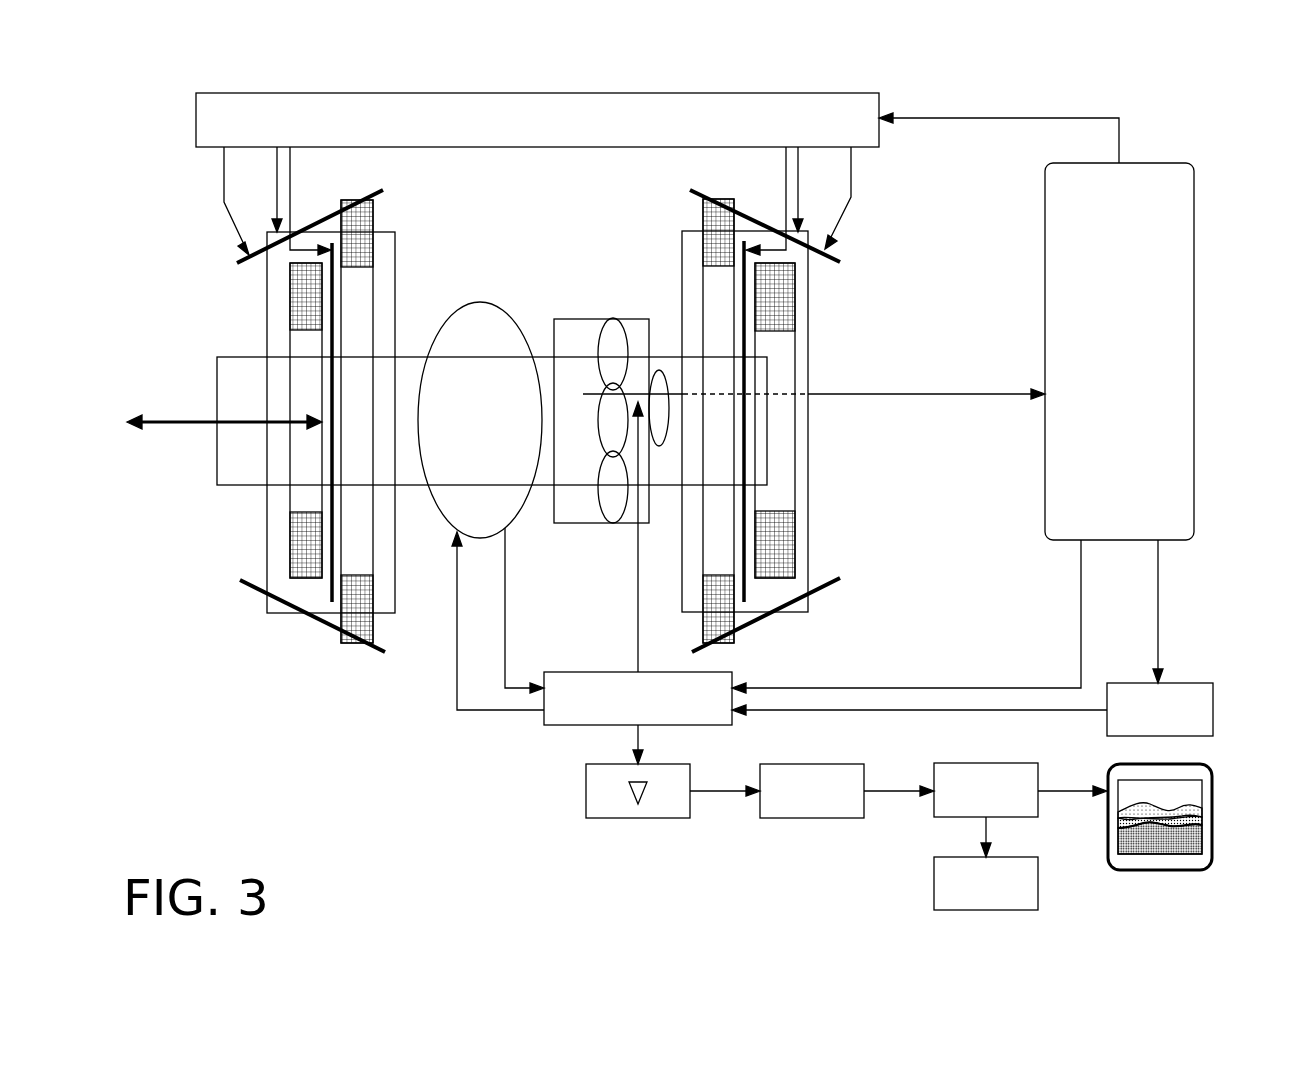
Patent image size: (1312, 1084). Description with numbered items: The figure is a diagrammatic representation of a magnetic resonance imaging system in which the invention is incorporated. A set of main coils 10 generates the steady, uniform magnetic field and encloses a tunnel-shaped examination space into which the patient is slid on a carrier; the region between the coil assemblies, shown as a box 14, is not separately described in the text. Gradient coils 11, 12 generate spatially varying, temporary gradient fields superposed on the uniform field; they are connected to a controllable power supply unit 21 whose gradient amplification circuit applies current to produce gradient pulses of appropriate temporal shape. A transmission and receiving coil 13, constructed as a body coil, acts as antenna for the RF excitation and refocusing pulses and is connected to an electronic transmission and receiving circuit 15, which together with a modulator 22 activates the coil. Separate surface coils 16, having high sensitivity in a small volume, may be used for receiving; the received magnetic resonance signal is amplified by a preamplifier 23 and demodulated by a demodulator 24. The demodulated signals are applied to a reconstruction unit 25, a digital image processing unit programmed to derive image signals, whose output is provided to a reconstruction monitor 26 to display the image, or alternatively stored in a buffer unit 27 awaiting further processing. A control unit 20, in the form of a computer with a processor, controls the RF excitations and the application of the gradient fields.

The main coils 10 is at (373, 211).
The gradient coil 11 is at (267, 522).
The gradient coil 12 is at (240, 582).
The transmission and receiving coil 13 is at (516, 320).
The sample volume 14 is at (217, 378).
The transmission and receiving circuit 15 is at (563, 727).
The surface coils 16 is at (637, 393).
The control unit 20 is at (1194, 222).
The controllable power supply unit 21 is at (196, 120).
The modulator 22 is at (1213, 707).
The preamplifier 23 is at (638, 820).
The demodulator 24 is at (813, 820).
The reconstruction unit 25 is at (975, 763).
The reconstruction monitor 26 is at (1213, 815).
The buffer unit 27 is at (934, 887).